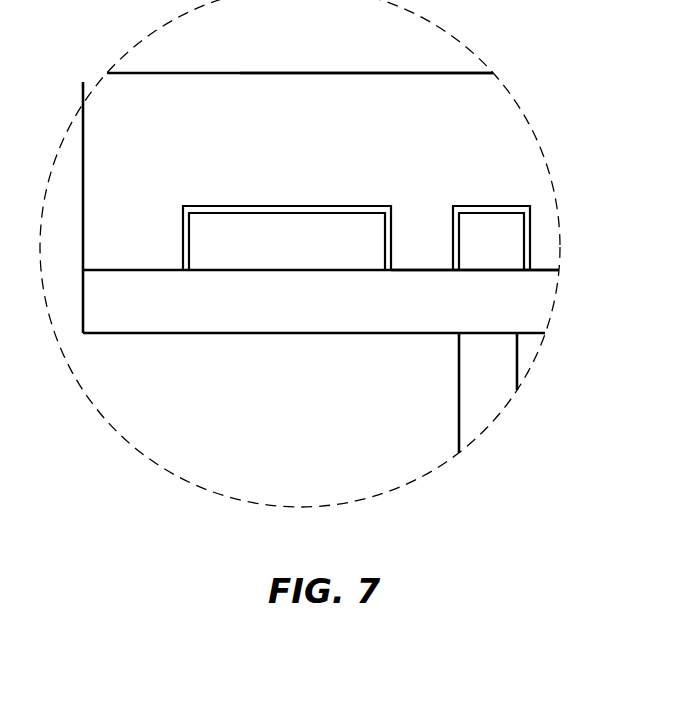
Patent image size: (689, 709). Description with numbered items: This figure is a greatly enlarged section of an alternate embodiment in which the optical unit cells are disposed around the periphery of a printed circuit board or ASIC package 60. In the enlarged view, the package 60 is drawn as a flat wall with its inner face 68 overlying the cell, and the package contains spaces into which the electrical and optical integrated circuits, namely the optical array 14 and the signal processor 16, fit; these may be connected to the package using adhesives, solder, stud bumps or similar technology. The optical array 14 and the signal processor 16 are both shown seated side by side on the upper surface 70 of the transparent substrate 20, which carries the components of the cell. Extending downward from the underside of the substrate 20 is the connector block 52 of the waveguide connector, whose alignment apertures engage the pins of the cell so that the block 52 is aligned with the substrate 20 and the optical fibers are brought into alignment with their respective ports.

The PCB or ASIC package 60 is at (228, 73).
The inner surface of lid 68 is at (310, 73).
The signal processor 16 is at (196, 251).
The optical array 14 is at (519, 248).
The top surface of substrate 70 is at (415, 271).
The transparent substrate 20 is at (187, 333).
The connector block 52 is at (459, 405).